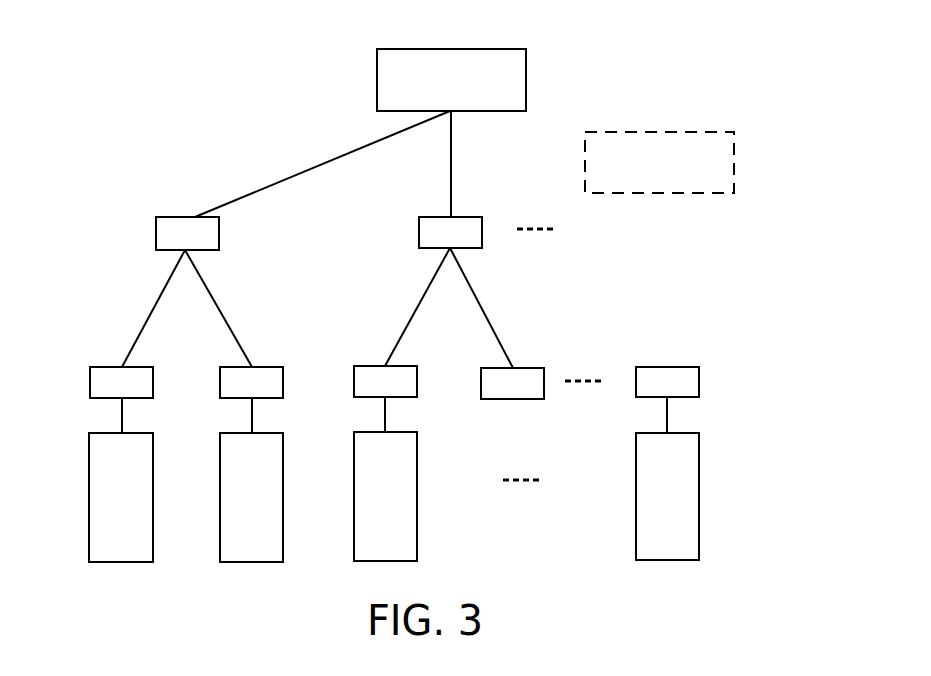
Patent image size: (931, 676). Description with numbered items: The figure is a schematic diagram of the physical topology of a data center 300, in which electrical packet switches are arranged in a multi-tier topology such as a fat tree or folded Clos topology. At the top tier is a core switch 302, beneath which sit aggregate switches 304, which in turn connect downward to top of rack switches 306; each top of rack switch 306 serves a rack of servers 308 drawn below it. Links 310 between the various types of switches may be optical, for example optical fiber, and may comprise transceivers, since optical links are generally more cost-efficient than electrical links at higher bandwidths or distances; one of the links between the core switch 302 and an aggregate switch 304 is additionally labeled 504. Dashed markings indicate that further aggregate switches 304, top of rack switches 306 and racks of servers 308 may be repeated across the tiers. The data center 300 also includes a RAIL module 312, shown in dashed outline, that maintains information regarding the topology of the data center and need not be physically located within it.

The data center 300 is at (721, 48).
The core switch 302 is at (434, 94).
The aggregate switches 304 is at (169, 244).
The top of rack (ToR) switches 306 is at (103, 393).
The racks of servers 308 is at (103, 507).
The links 310 is at (310, 167).
The RAIL module 312 is at (642, 175).
The link 504 is at (451, 143).